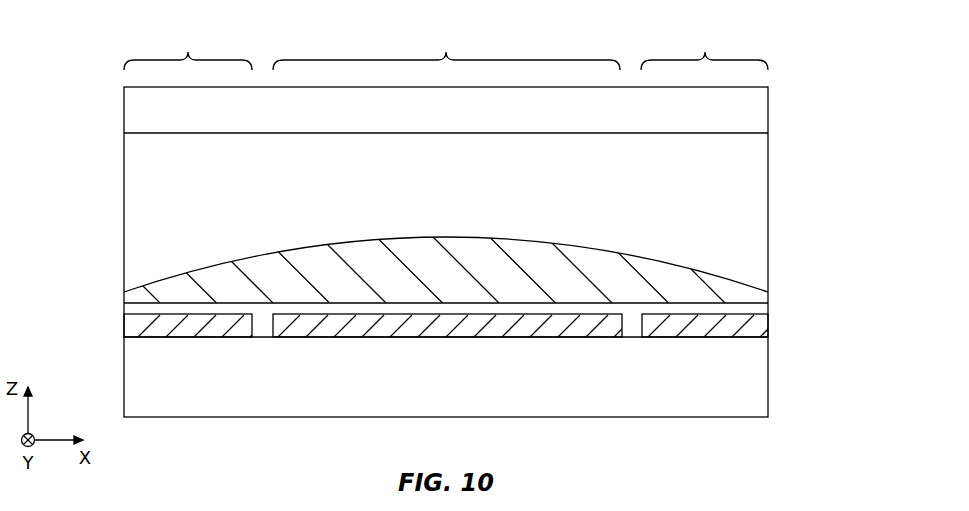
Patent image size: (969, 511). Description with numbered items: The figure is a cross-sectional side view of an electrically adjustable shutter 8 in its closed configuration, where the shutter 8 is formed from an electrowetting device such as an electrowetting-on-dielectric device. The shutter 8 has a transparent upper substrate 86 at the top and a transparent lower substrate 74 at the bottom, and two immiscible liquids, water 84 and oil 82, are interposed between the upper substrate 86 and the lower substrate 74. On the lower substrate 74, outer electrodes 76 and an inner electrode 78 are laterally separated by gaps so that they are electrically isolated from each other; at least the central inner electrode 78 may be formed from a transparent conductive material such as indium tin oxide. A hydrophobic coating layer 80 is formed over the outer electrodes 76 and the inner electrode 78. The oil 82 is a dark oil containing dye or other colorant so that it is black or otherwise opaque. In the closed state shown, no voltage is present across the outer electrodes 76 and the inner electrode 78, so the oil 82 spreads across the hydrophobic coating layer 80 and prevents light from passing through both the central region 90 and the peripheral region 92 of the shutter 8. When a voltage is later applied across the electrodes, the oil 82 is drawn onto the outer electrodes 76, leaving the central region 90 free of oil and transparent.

The electrically adjustable shutter 8 is at (845, 123).
The transparent lower substrate 74 is at (762, 378).
The outer electrodes 76 is at (128, 322).
The inner electrode 78 is at (391, 331).
The hydrophobic coating layer 80 is at (124, 308).
The oil 82 is at (700, 290).
The water 84 is at (762, 190).
The transparent upper substrate 86 is at (768, 110).
The central region 90 is at (446, 49).
The peripheral region 92 is at (446, 50).